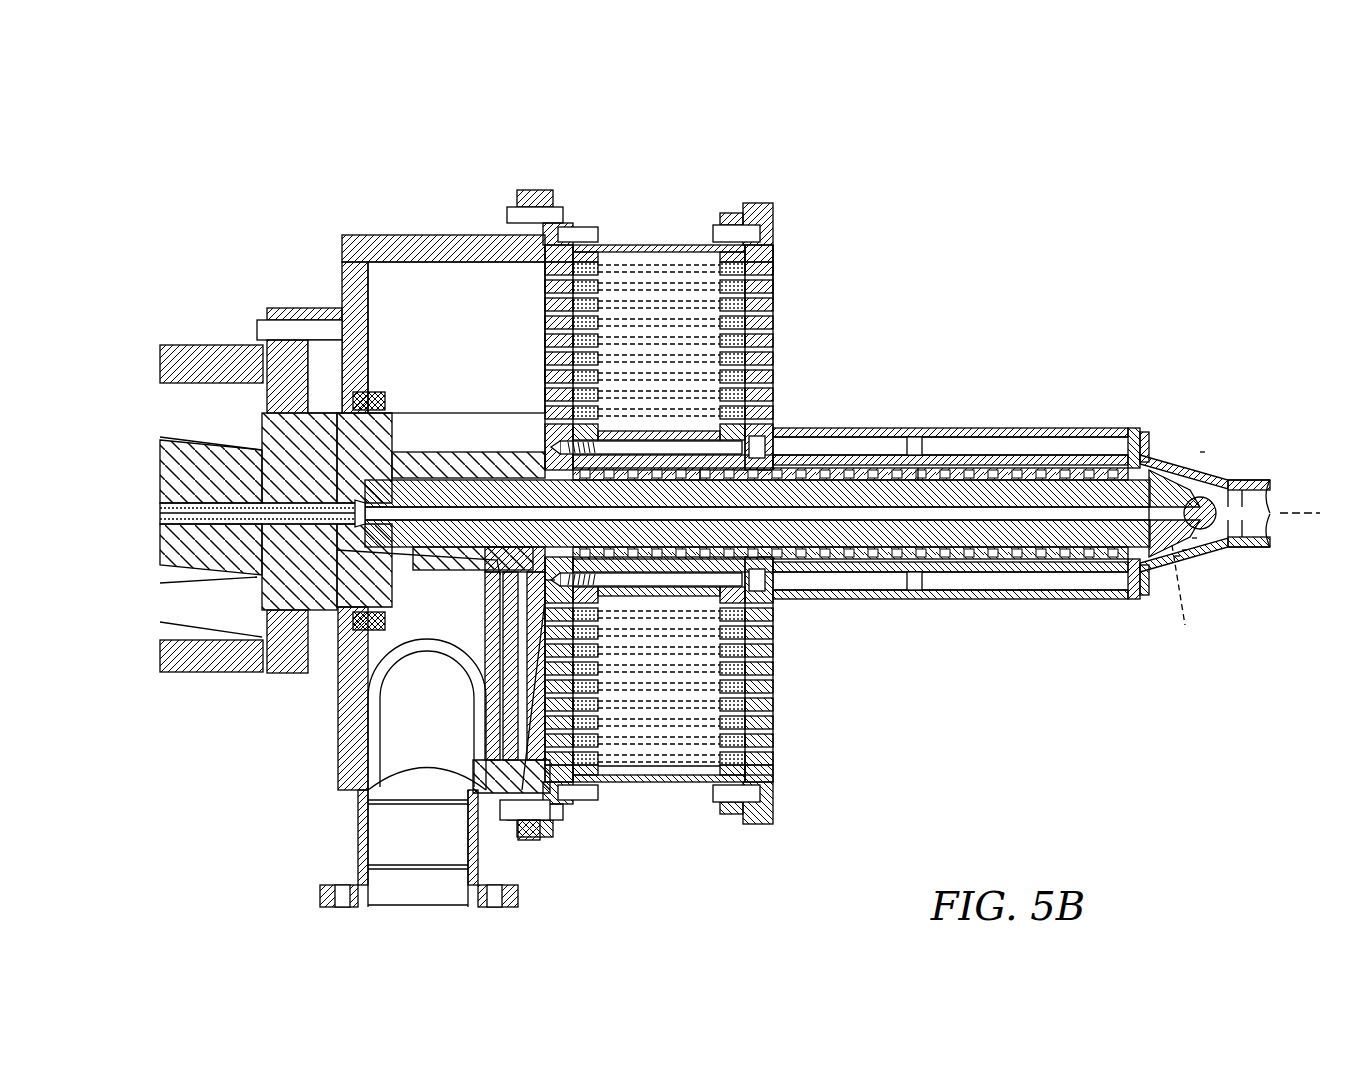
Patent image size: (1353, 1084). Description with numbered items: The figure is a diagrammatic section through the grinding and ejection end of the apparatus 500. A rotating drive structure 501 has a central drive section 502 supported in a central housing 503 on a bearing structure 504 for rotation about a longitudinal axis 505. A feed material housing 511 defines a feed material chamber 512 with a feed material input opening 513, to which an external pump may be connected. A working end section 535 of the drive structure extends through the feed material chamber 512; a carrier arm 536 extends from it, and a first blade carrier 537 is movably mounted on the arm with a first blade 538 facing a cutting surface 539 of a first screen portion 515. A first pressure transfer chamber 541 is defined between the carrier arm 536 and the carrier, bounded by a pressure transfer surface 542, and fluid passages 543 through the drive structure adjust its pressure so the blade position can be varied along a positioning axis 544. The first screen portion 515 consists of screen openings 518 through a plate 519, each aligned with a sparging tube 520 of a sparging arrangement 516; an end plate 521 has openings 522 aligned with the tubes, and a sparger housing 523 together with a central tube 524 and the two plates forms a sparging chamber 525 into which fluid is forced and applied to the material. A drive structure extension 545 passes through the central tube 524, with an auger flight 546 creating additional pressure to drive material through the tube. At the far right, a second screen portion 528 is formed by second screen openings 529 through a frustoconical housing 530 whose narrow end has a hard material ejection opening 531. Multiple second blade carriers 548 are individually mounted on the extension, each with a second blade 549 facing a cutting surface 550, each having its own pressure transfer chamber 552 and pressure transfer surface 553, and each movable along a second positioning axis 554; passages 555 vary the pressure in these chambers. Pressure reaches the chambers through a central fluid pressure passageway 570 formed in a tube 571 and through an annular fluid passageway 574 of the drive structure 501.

The apparatus 500 is at (318, 114).
The drive structure 501 is at (231, 580).
The central drive section 502 is at (207, 560).
The central housing 503 is at (262, 340).
The bearing structure 504 is at (200, 398).
The longitudinal axis 505 is at (1302, 510).
The feed material housing 511 is at (452, 236).
The feed material chamber 512 is at (455, 308).
The feed material input opening 513 is at (396, 904).
The first screen portion 515 is at (538, 368).
The sparging arrangement 516 is at (640, 188).
The screen openings 518 is at (545, 613).
The plate 519 is at (545, 600).
The sparging tubes 520 is at (680, 278).
The end plate 521 is at (776, 246).
The openings 522 is at (775, 301).
The sparger housing 523 is at (690, 778).
The central tube 524 is at (702, 470).
The sparging chamber 525 is at (650, 766).
The second screen portion 528 is at (1202, 450).
The second screen openings 529 is at (1160, 480).
The frustoconical housing 530 is at (1221, 482).
The hard material ejection opening 531 is at (1240, 523).
The working end section 535 is at (453, 452).
The carrier arm 536 is at (490, 740).
The first blade carrier 537 is at (505, 735).
The first blade 538 is at (527, 680).
The cutting surface 539 is at (545, 394).
The first pressure transfer chamber 541 is at (513, 678).
The pressure transfer surface 542 is at (500, 653).
The fluid passages 543 is at (345, 582).
The positioning axis 544 is at (553, 660).
The drive structure extension 545 is at (1132, 572).
The auger flight 546 is at (919, 468).
The second blade carriers 548 is at (1134, 432).
The second blade 549 is at (1168, 440).
The cutting surface 550 is at (1150, 562).
The pressure transfer chamber 552 is at (1182, 551).
The pressure transfer surface 553 is at (1193, 539).
The second positioning axis 554 is at (1175, 557).
The passages 555 is at (1028, 512).
The central fluid pressure passageway 570 is at (160, 513).
The tube 571 is at (160, 522).
The annular fluid passageway 574 is at (180, 503).